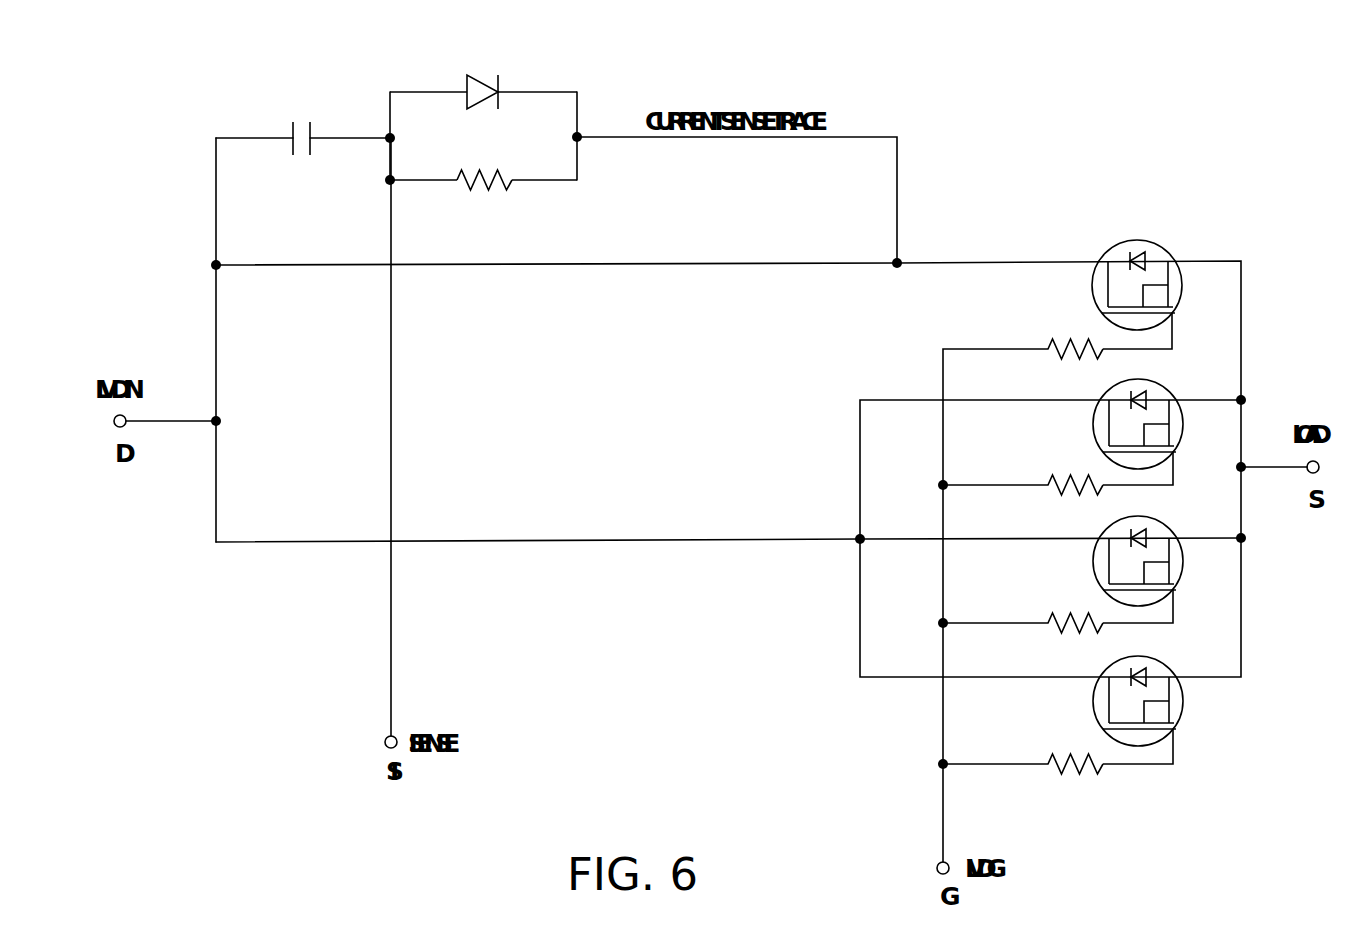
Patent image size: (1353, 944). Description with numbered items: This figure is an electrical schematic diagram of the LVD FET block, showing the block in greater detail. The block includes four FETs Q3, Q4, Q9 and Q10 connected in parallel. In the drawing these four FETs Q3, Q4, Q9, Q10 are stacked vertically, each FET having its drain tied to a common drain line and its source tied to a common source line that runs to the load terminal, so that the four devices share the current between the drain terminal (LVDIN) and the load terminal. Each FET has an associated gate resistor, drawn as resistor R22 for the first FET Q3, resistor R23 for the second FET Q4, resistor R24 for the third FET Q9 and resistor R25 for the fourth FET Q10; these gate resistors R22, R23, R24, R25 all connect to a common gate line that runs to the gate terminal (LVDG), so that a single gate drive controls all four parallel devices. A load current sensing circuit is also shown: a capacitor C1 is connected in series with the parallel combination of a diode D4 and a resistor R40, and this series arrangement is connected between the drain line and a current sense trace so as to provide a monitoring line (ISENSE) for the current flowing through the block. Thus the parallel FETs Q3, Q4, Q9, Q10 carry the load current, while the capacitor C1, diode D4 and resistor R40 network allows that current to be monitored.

The capacitor C1 is at (301, 108).
The diode D4 is at (483, 64).
The resistor R40 is at (483, 155).
The FET Q3 is at (1105, 279).
The gate resistor 10.0 ohm R22 is at (1075, 321).
The FET Q4 is at (1105, 417).
The gate resistor 10.0 ohm R23 is at (1075, 456).
The FET Q9 is at (1105, 553).
The gate resistor 10.0 ohm R24 is at (1075, 594).
The FET Q10 is at (1106, 694).
The gate resistor 10.0 ohm R25 is at (1075, 735).